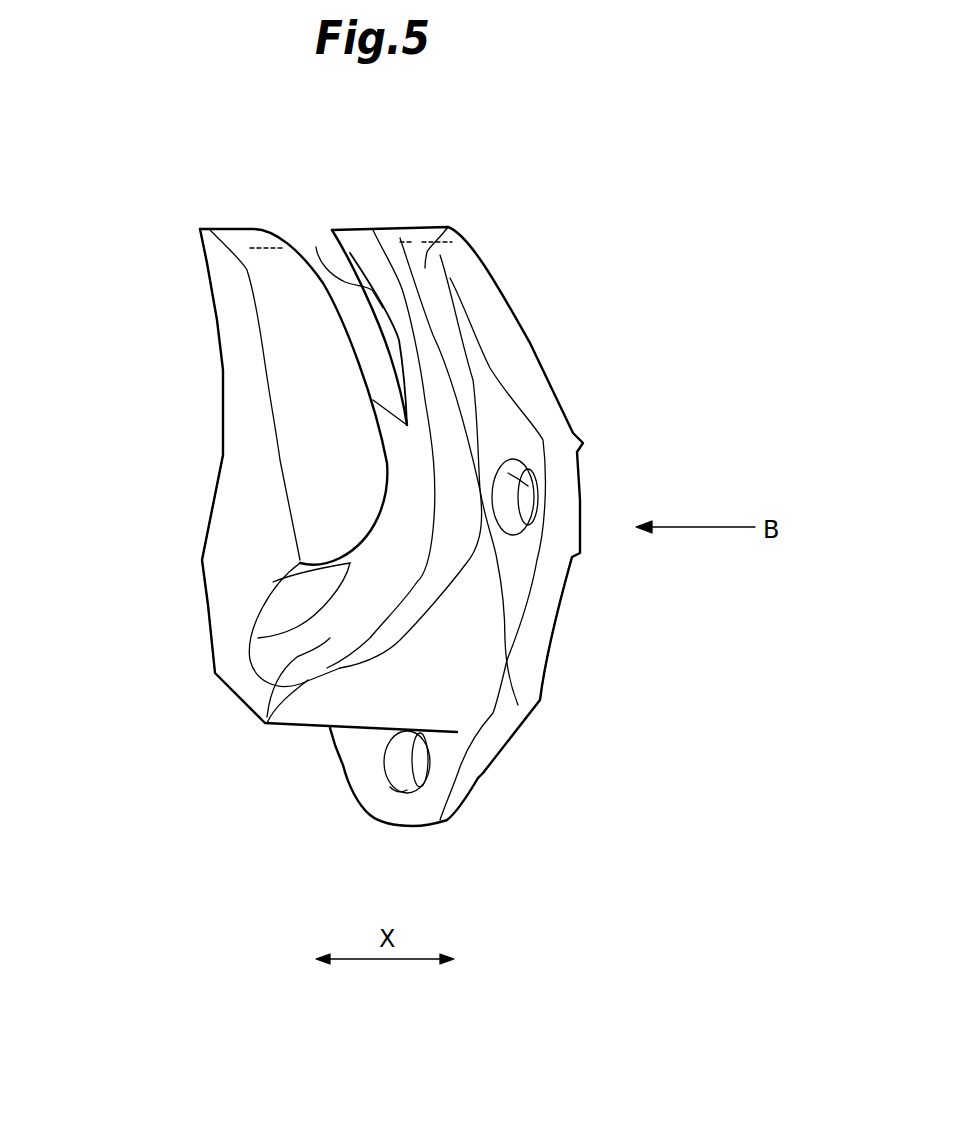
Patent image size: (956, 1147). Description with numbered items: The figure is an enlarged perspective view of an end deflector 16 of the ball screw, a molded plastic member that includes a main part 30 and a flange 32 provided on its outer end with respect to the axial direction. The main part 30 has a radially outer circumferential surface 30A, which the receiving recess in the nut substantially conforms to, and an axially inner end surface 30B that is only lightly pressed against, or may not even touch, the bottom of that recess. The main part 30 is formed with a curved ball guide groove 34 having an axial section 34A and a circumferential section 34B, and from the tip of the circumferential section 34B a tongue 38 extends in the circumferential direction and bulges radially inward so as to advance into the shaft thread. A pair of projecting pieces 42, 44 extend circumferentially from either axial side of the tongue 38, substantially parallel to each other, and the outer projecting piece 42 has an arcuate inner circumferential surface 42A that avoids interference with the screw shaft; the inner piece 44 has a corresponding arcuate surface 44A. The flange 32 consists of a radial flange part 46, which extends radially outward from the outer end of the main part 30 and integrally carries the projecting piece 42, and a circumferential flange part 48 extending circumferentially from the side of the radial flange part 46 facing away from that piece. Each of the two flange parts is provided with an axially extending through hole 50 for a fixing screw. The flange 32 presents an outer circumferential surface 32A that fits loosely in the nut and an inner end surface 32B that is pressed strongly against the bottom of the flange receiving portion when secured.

The end deflector 16 is at (555, 378).
The main part 30 is at (475, 641).
The outer circumferential surface 30A is at (478, 684).
The inner end surface 30B is at (213, 593).
The flange 32 is at (543, 580).
The outer circumferential surface 32A is at (550, 610).
The inner end surface 32B is at (503, 420).
The ball guide groove 34 is at (397, 577).
The axial section 34A is at (267, 725).
The circumferential section 34B is at (403, 462).
The tongue 38 is at (385, 420).
The projecting piece 42 is at (446, 229).
The inner circumferential surface 42A is at (316, 247).
The projecting piece 44 is at (263, 272).
The outer surface of second prong 44A is at (220, 317).
The radial flange part 46 is at (490, 375).
The circumferential flange part 48 is at (343, 783).
The through hole 50 is at (522, 487).